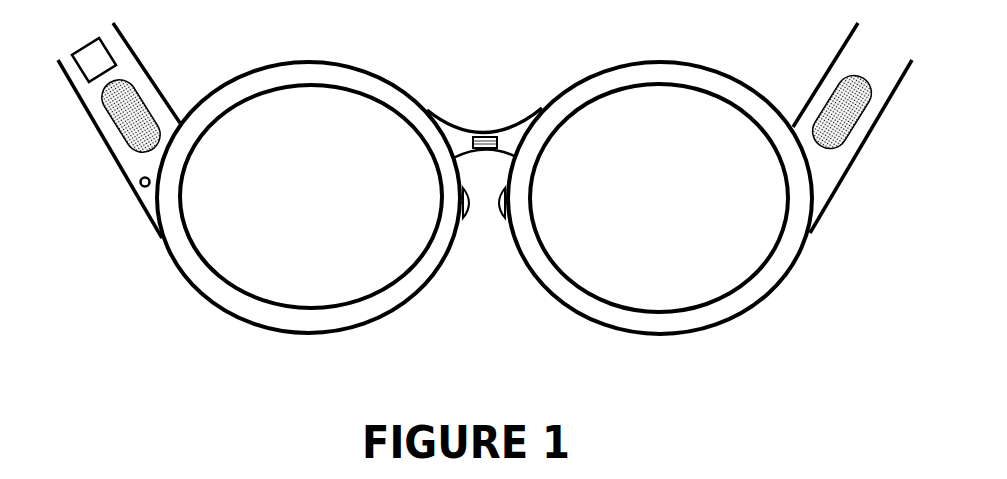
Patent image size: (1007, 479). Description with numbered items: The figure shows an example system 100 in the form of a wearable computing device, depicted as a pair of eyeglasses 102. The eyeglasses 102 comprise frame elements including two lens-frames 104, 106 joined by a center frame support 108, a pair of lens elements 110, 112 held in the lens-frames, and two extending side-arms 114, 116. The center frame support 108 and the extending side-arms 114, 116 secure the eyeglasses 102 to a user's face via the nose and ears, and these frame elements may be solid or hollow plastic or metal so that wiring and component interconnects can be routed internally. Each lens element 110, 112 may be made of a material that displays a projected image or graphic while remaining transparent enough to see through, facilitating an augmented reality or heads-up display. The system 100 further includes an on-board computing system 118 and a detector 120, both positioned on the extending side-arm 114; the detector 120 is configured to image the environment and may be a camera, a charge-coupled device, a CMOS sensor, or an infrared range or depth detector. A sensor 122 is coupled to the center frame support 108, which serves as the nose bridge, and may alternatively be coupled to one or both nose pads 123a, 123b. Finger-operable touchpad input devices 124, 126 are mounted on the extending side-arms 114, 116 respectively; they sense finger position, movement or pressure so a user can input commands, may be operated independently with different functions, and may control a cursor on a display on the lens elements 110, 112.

The system 100 is at (817, 318).
The eyeglasses 102 is at (484, 182).
The lens-frame 104 is at (270, 63).
The lens-frame 106 is at (632, 62).
The center frame support 108 is at (478, 132).
The lens element 110 is at (240, 263).
The lens element 112 is at (600, 280).
The extending side-arm 114 is at (160, 97).
The extending side-arm 116 is at (822, 82).
The on-board computing system 118 is at (100, 60).
The detector 120 is at (138, 182).
The sensor 122 is at (498, 148).
The nose pad 123a is at (463, 215).
The nose pad 123b is at (508, 203).
The finger-operable touchpad input device 124 is at (130, 113).
The finger-operable touchpad input device 126 is at (842, 122).